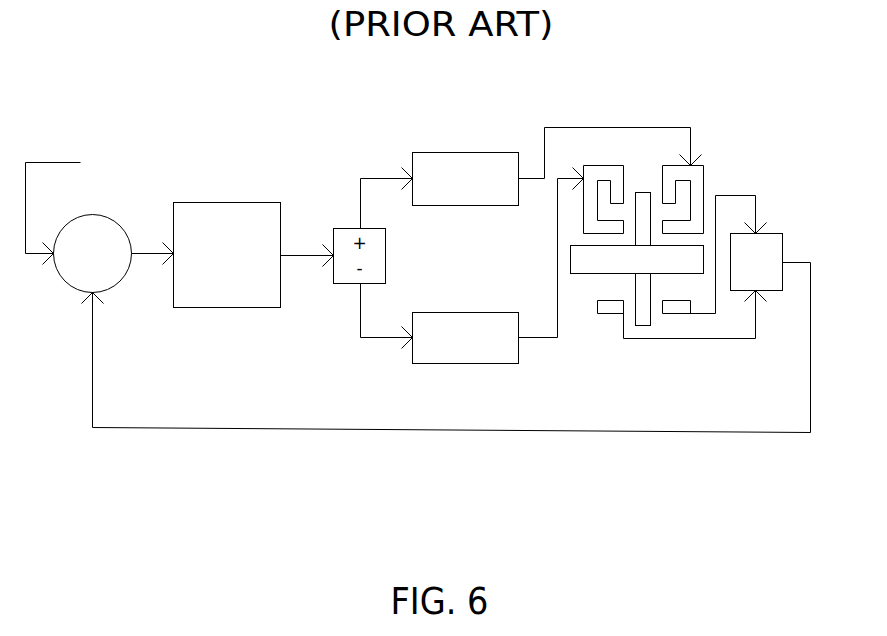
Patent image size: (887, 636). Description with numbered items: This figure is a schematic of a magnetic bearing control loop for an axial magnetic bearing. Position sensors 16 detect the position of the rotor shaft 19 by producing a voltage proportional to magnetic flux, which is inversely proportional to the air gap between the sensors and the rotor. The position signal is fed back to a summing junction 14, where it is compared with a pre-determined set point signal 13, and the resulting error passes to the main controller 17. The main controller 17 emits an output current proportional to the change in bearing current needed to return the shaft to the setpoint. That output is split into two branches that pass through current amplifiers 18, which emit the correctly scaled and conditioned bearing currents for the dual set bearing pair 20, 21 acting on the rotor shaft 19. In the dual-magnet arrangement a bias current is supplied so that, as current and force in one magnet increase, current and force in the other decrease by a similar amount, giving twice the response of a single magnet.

The set point signal 13 is at (66, 209).
The summing junction 14 is at (93, 254).
The position sensors 16 is at (682, 267).
The main controller 17 is at (227, 255).
The current amplifiers 18 is at (466, 258).
The rotor shaft 19 is at (637, 259).
The dual set bearing pair 20 is at (644, 189).
The dual set bearing pair 21 is at (750, 231).